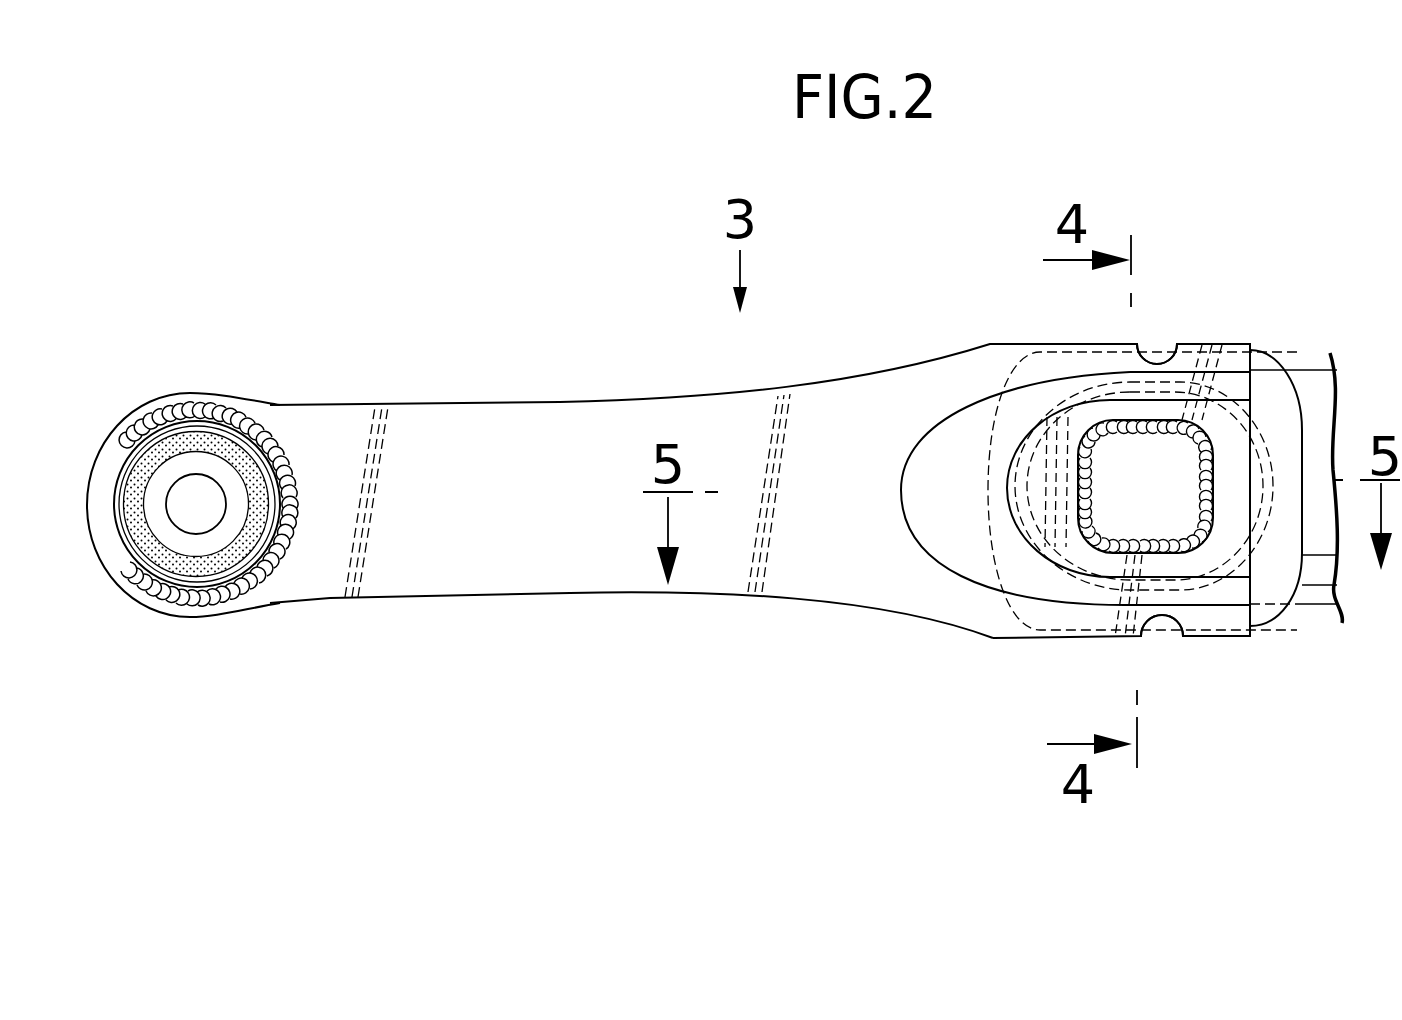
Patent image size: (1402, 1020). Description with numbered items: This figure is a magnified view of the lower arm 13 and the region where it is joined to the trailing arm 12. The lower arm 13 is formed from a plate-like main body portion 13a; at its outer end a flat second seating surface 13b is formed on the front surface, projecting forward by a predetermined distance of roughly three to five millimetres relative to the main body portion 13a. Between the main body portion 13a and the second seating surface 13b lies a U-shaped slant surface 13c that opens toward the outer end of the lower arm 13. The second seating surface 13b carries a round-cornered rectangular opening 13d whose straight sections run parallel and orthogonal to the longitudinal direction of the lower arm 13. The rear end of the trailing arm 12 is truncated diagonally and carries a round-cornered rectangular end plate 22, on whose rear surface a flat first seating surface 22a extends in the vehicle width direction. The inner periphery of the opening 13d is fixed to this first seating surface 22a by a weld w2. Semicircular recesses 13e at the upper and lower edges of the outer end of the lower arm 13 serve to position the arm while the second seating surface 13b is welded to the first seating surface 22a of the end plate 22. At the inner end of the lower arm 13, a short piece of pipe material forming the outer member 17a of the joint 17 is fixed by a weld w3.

The trailing arm 12 is at (1314, 617).
The lower arm 13 is at (534, 385).
The main body portion 13a is at (588, 562).
The second seating surface 13b is at (1203, 562).
The slant surface 13c is at (1043, 587).
The opening 13d is at (1095, 490).
The semicircular recess 13e is at (1155, 352).
The joint 17 is at (108, 450).
The outer member 17a is at (262, 560).
The end plate 22 is at (1270, 336).
The first seating surface 22a is at (1285, 405).
The weld w2 is at (1140, 537).
The weld w3 is at (257, 432).